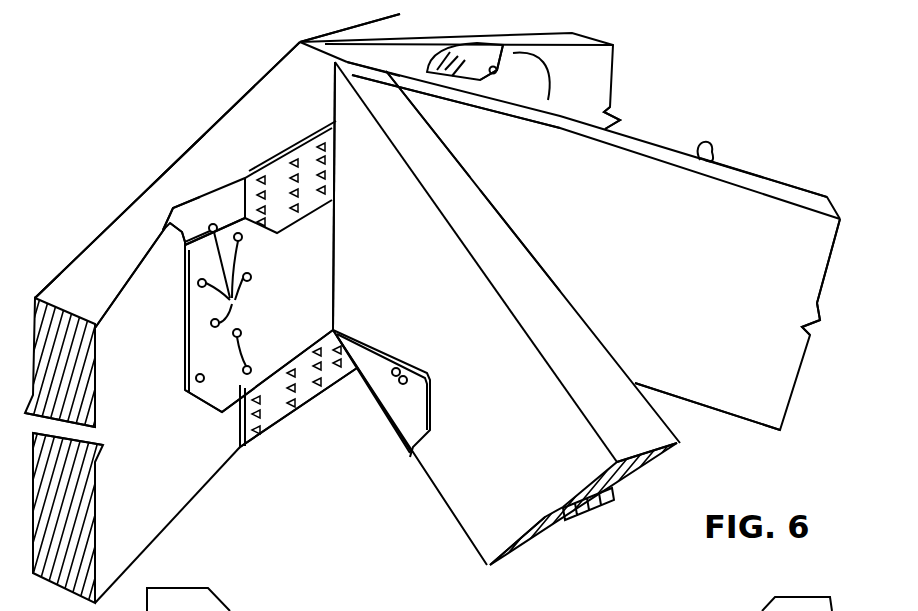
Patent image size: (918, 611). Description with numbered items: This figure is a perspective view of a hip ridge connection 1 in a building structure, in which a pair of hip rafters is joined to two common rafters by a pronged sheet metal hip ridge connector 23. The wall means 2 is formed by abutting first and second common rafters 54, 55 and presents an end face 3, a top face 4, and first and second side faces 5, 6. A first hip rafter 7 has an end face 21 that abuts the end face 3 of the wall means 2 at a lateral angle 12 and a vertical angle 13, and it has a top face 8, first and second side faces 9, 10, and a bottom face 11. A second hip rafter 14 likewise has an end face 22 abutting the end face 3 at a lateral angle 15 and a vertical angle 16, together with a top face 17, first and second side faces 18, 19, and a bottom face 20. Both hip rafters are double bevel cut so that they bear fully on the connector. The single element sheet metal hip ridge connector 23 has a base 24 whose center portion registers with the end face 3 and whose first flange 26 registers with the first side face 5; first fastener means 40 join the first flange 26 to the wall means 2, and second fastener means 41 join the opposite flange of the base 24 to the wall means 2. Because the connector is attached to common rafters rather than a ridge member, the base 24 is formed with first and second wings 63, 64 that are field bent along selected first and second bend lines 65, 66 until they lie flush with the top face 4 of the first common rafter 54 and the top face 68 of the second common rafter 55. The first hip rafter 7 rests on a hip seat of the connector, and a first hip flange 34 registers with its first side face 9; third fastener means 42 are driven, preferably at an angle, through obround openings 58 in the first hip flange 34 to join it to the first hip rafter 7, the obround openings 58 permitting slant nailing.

The hip ridge connection 1 is at (727, 147).
The wall means 2 is at (178, 160).
The end face 3 is at (300, 43).
The top face 4 is at (330, 118).
The first side face 5 is at (139, 355).
The second side face 6 is at (601, 95).
The first hip rafter 7 is at (518, 236).
The top face 8 is at (564, 345).
The first side face 9 is at (527, 475).
The second side face 10 is at (680, 446).
The bottom face 11 is at (512, 563).
The lateral angle 12 is at (296, 134).
The vertical angle 13 is at (372, 403).
The second hip rafter 14 is at (745, 172).
The lateral angle 15 is at (548, 60).
The vertical angle 16 is at (400, 84).
The top face 17 is at (804, 199).
The first side face 18 is at (766, 260).
The second side face 19 is at (700, 160).
The bottom face 20 is at (780, 432).
The end face 21 is at (338, 98).
The end face 22 is at (407, 70).
The hip ridge connector 23 is at (168, 215).
The base 24 is at (185, 277).
The first flange 26 is at (300, 323).
The first hip flange 34 is at (415, 417).
The first fastener means 40 is at (232, 303).
The second fastener means 41 is at (490, 76).
The third fastener means 42 is at (406, 377).
The first common rafter 54 is at (38, 296).
The second common rafter 55 is at (615, 68).
The obround openings 58 is at (395, 368).
The first wing 63 is at (172, 210).
The second wing 64 is at (440, 62).
The first bend line 65 is at (190, 232).
The second bend line 66 is at (505, 55).
The top face 68 is at (384, 48).